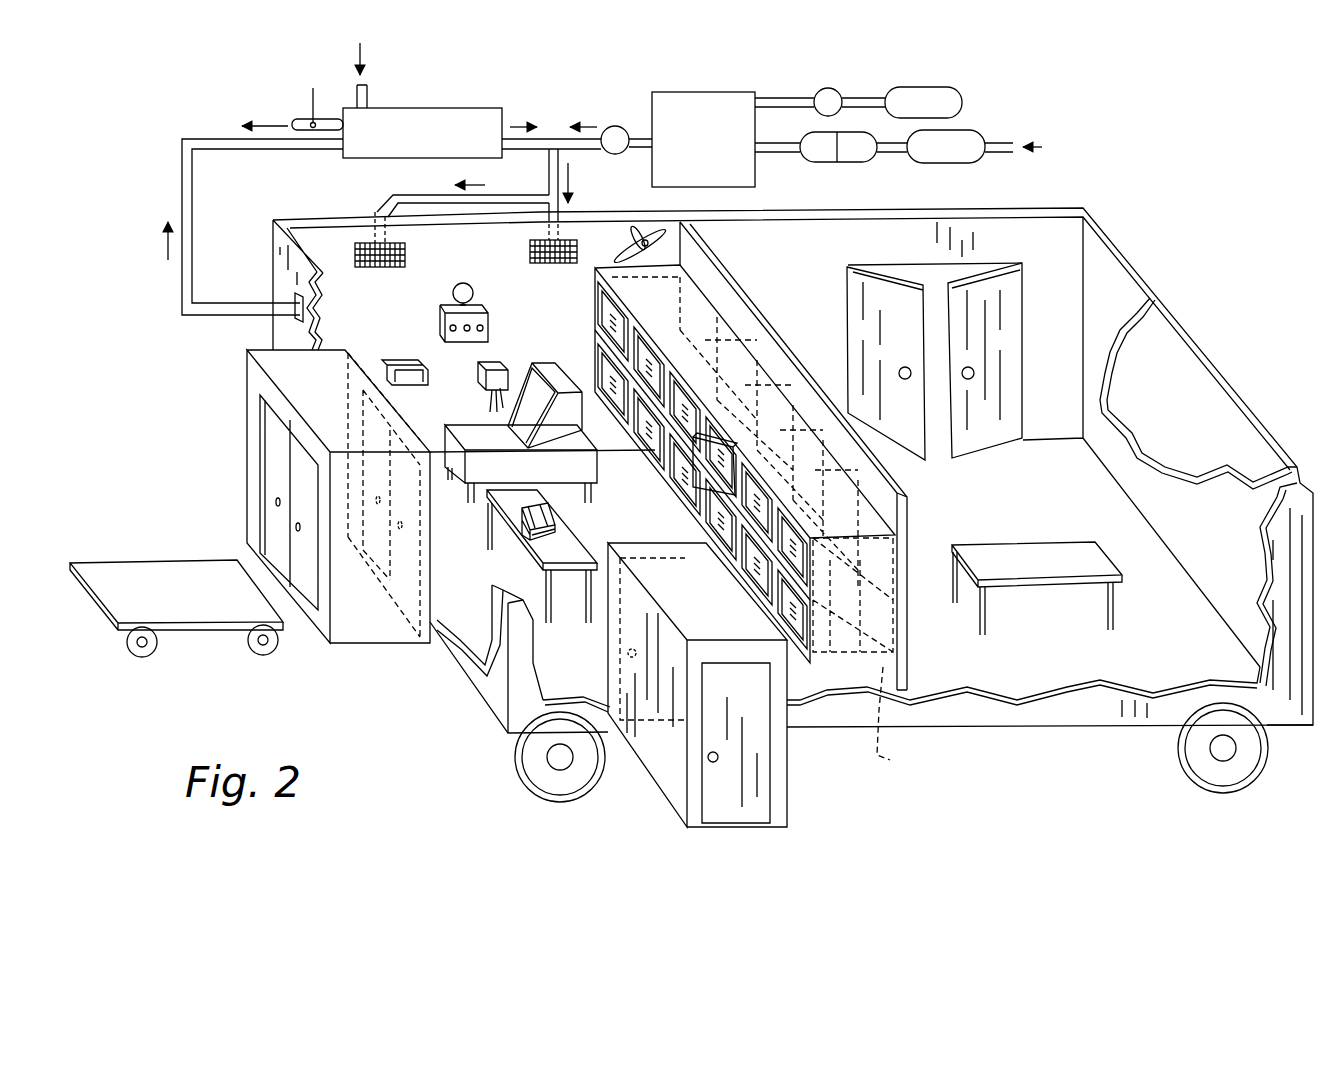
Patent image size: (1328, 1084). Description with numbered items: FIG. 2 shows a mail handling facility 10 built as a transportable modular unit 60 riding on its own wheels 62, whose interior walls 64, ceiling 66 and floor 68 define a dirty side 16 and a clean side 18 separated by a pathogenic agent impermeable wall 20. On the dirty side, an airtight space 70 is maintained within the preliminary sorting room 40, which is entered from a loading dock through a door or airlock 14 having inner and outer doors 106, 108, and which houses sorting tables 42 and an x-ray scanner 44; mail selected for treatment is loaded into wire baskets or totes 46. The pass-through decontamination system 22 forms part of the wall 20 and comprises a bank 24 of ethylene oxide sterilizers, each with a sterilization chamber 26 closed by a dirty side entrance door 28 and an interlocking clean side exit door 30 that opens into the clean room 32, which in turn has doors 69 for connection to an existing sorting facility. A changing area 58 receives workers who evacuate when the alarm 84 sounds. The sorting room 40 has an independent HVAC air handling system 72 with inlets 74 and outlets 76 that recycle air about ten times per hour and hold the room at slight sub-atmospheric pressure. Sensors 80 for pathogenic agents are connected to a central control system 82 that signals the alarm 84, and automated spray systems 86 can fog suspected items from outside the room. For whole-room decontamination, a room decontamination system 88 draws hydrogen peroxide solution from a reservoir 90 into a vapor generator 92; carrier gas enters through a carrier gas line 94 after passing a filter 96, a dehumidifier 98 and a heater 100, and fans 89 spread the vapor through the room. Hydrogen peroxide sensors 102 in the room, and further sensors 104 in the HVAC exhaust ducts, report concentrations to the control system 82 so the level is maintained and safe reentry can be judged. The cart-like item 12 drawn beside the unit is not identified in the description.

The mail handling facility 10 is at (1240, 205).
The cart 12 is at (145, 590).
The airlock door 14 is at (262, 380).
The dirty side 16 is at (828, 683).
The clean side 18 is at (943, 653).
The pathogenic agent impermeable barrier 20 is at (750, 290).
The pass-through decontamination system 22 is at (730, 340).
The bank of ethylene oxide sterilizers 24 is at (655, 477).
The sterilization chamber 26 is at (899, 717).
The dirty side entrance door 28 is at (717, 480).
The clean side exit door 30 is at (800, 395).
The clean room 32 is at (1112, 310).
The preliminary sorting room 40 is at (335, 252).
The sorting tables 42 is at (520, 540).
The x-ray scanner 44 is at (548, 365).
The wire baskets or totes 46 is at (488, 525).
The changing area 58 is at (665, 733).
The modular unit 60 is at (1228, 372).
The wheels 62 is at (552, 783).
The interior walls 64 is at (1228, 542).
The ceiling 66 is at (1180, 490).
The floor 68 is at (1080, 668).
The clean side doors 69 is at (1000, 333).
The airtight space 70 is at (472, 600).
The air handling system 72 is at (405, 108).
The inlets 74 is at (530, 252).
The outlets 76 is at (272, 273).
The sensors 80 is at (488, 328).
The central control system 82 is at (443, 318).
The alarm 84 is at (470, 290).
The automated spray systems 86 is at (478, 372).
The room decontamination system 88 is at (800, 77).
The fans 89 is at (652, 238).
The reservoir 90 is at (958, 97).
The vapor generator 92 is at (692, 92).
The carrier gas line 94 is at (775, 152).
The filter 96 is at (955, 160).
The dehumidifier 98 is at (860, 158).
The heater 100 is at (820, 162).
The hydrogen peroxide sensors 102 is at (400, 358).
The exhaust hydrogen peroxide sensors 104 is at (313, 105).
The inner door 106 is at (278, 520).
The outer door 108 is at (377, 470).